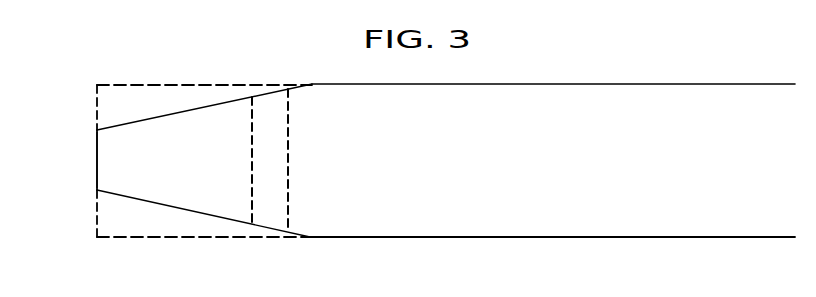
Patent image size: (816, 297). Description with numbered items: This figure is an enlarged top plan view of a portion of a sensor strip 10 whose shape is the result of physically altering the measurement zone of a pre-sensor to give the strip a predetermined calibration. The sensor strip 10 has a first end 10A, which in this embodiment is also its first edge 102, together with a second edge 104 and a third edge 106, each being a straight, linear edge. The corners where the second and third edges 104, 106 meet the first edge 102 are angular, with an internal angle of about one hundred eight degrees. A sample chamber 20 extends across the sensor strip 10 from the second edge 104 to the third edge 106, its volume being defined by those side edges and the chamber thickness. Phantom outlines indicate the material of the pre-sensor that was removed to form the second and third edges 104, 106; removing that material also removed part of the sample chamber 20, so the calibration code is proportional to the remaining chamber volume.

The sensor strip 10 is at (542, 67).
The first end 10A is at (97, 184).
The first edge 102 is at (97, 163).
The second edge 104 is at (157, 117).
The third edge 106 is at (180, 208).
The sample chamber 20 is at (267, 168).